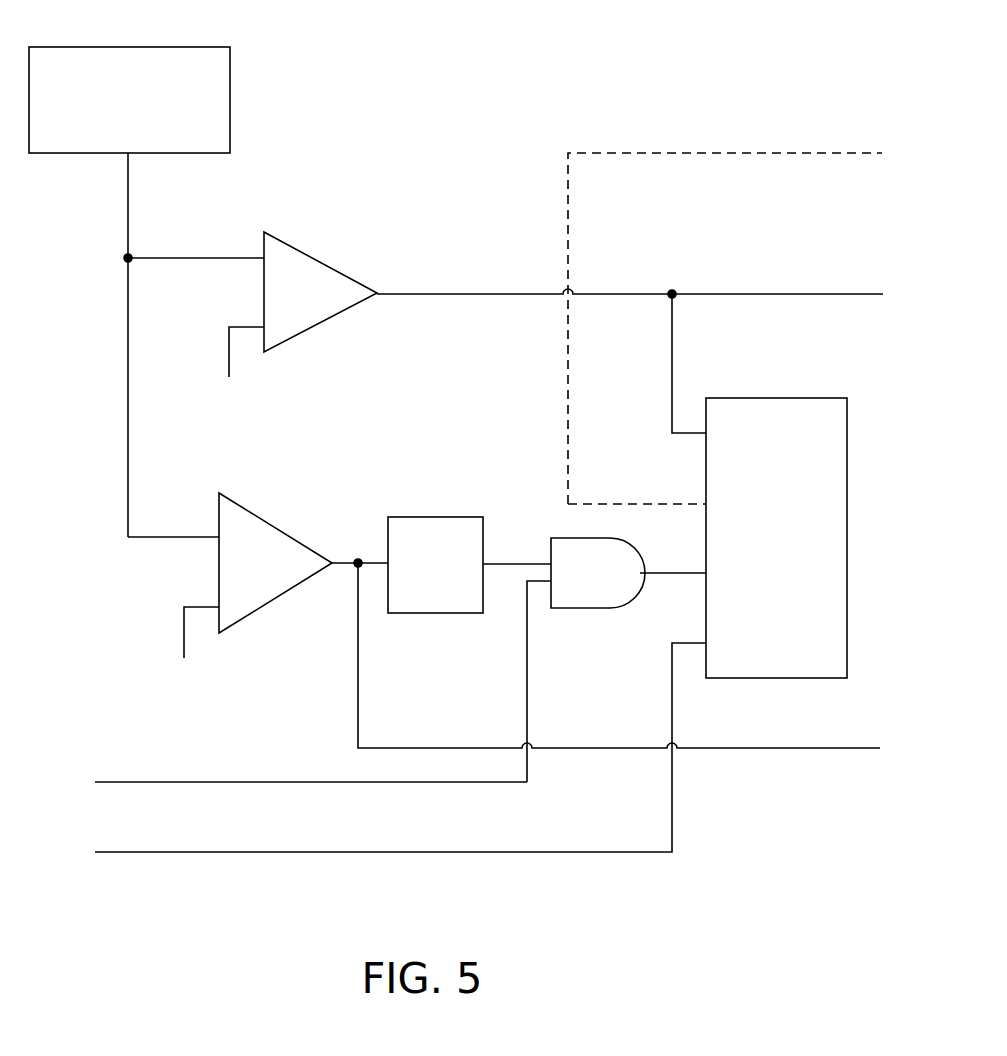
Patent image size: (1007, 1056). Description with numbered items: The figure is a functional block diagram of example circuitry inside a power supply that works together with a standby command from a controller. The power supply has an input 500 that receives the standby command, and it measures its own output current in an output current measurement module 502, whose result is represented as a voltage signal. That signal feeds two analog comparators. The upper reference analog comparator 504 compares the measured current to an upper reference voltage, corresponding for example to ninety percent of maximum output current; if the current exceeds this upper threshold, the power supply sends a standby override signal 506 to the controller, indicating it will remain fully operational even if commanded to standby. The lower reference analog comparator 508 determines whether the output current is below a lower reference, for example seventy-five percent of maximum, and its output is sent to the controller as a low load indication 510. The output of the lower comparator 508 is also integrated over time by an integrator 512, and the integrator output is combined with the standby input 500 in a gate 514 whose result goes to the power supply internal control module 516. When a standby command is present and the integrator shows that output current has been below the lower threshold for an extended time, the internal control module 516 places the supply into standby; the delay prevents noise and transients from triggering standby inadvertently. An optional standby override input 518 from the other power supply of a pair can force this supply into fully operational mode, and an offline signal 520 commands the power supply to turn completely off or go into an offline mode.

The standby command input 500 is at (167, 783).
The output current measurement module 502 is at (203, 47).
The upper reference analog comparator 504 is at (327, 262).
The standby override signal 506 is at (852, 296).
The lower reference analog comparator 508 is at (295, 537).
The low load signal 510 is at (808, 750).
The integrator 512 is at (463, 517).
The AND gate 514 is at (576, 586).
The power supply internal control module 516 is at (812, 398).
The optional standby override input from paired power supply 518 is at (802, 155).
The offline command signal 520 is at (167, 853).